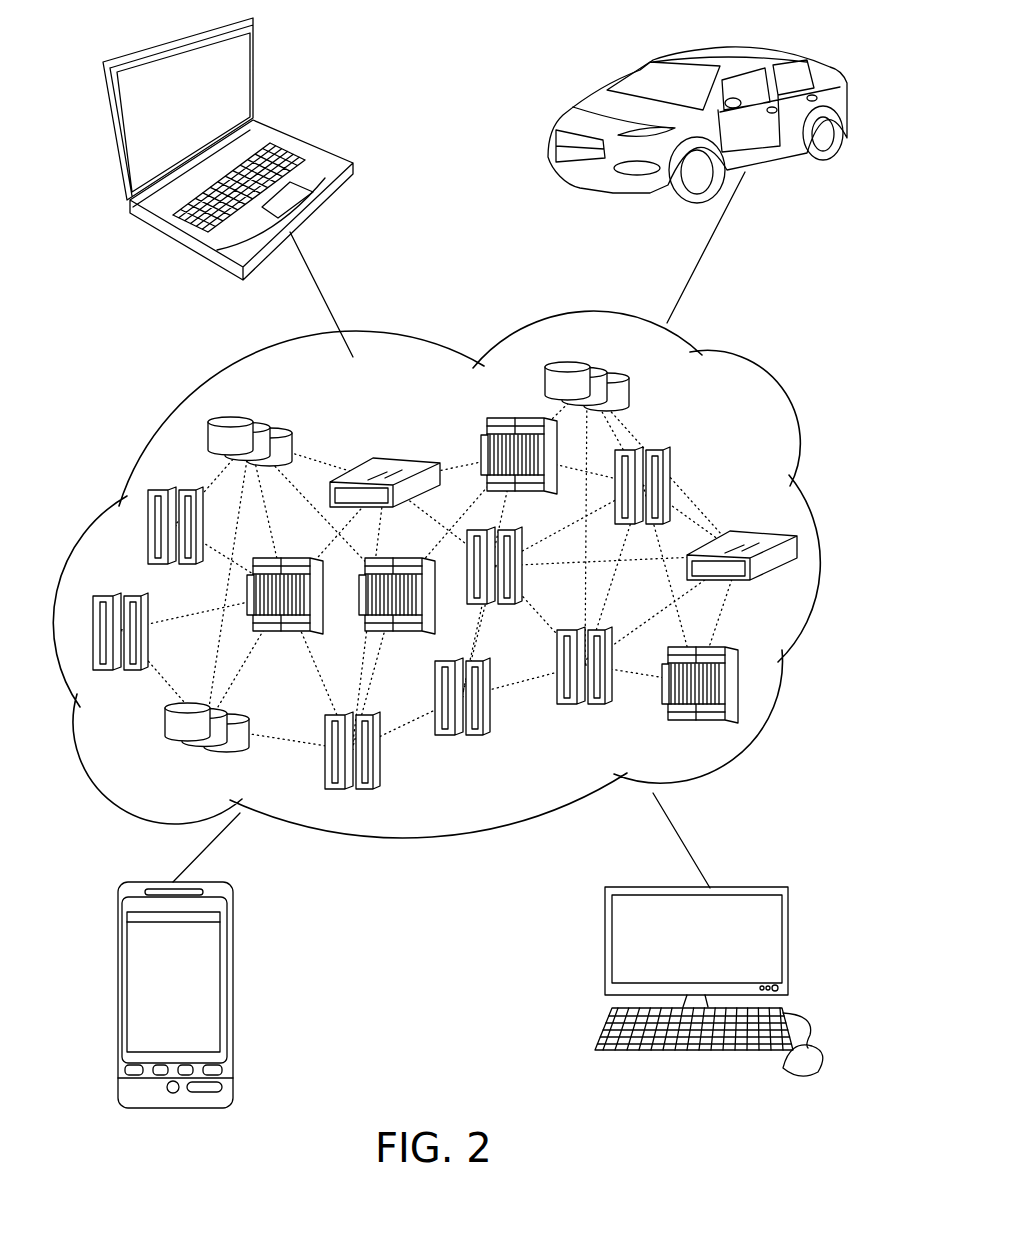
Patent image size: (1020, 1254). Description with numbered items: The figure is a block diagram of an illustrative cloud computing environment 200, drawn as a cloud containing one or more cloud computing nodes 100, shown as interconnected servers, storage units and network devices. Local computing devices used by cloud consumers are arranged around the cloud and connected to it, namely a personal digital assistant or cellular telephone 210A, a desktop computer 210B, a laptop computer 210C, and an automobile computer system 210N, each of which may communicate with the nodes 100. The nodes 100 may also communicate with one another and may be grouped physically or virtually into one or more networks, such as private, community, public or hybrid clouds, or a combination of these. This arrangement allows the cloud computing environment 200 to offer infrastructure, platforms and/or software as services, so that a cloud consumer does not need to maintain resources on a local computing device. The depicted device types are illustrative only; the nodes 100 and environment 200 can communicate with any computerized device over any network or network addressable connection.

The cloud computing node 100 is at (768, 523).
The cloud computing environment 200 is at (773, 375).
The personal digital assistant (PDA) or cellular telephone 210A is at (228, 907).
The desktop computer 210B is at (790, 903).
The laptop computer 210C is at (312, 145).
The automobile computer system 210N is at (805, 60).